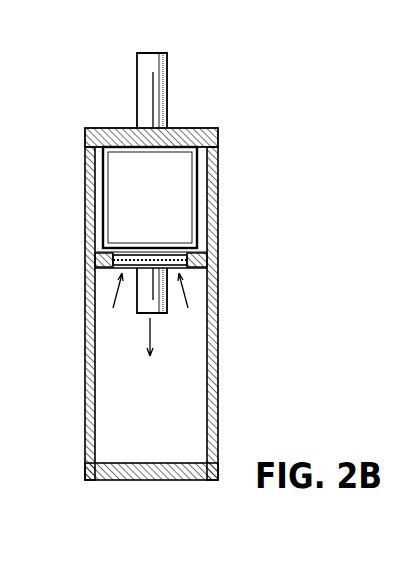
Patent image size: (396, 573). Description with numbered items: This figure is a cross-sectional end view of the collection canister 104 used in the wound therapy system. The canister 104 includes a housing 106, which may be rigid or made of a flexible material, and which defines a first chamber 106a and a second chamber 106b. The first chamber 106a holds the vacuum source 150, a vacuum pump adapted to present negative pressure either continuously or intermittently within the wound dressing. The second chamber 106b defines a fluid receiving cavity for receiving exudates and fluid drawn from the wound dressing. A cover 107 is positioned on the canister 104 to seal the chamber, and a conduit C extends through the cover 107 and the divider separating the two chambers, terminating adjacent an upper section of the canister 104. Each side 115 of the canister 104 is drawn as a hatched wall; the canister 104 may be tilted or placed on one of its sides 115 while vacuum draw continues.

The collection canister 104 is at (157, 251).
The housing 106 is at (155, 313).
The first chamber 106a is at (88, 204).
The second chamber 106b is at (94, 372).
The cover 107 is at (105, 130).
The side 115 is at (84, 293).
The vacuum source 150 is at (177, 158).
The conduit C is at (148, 67).